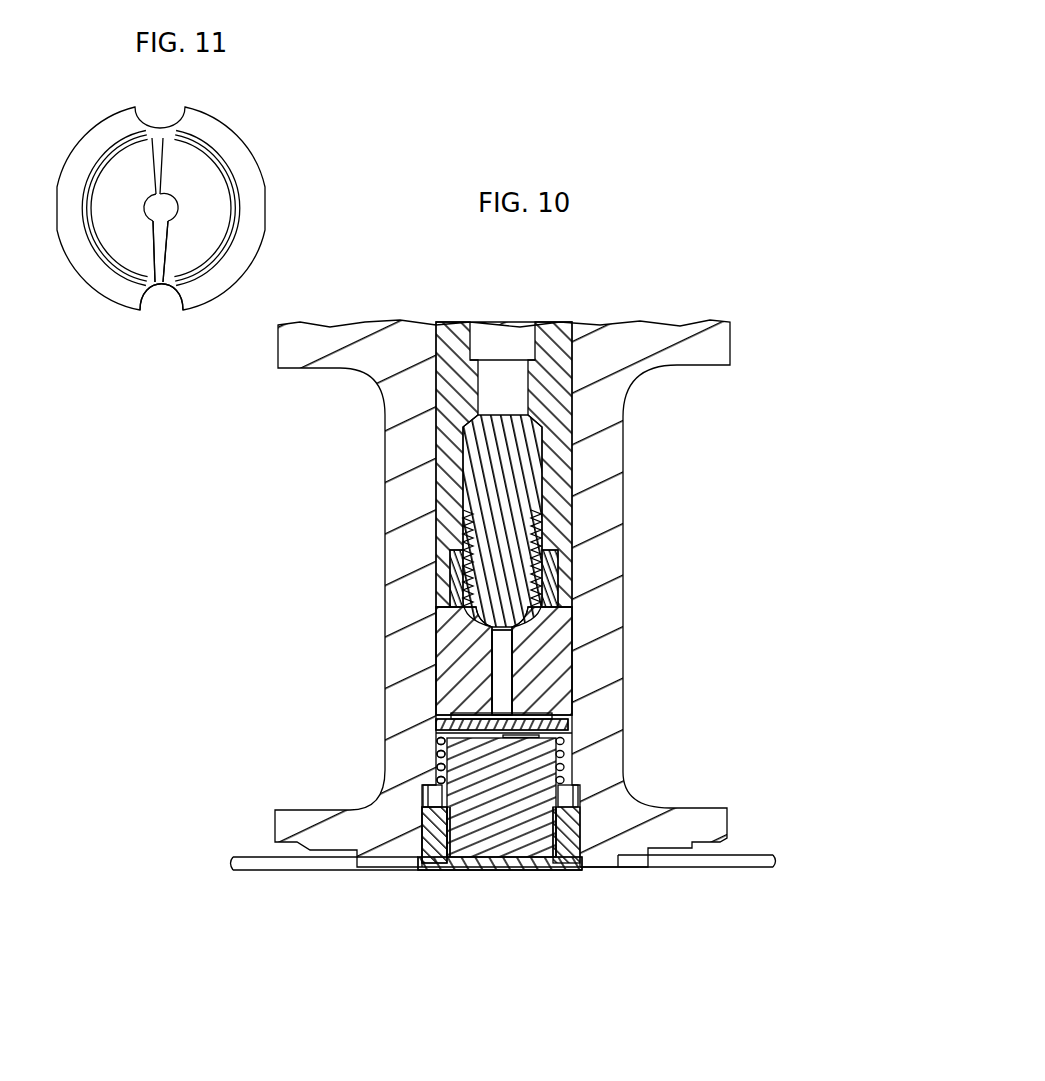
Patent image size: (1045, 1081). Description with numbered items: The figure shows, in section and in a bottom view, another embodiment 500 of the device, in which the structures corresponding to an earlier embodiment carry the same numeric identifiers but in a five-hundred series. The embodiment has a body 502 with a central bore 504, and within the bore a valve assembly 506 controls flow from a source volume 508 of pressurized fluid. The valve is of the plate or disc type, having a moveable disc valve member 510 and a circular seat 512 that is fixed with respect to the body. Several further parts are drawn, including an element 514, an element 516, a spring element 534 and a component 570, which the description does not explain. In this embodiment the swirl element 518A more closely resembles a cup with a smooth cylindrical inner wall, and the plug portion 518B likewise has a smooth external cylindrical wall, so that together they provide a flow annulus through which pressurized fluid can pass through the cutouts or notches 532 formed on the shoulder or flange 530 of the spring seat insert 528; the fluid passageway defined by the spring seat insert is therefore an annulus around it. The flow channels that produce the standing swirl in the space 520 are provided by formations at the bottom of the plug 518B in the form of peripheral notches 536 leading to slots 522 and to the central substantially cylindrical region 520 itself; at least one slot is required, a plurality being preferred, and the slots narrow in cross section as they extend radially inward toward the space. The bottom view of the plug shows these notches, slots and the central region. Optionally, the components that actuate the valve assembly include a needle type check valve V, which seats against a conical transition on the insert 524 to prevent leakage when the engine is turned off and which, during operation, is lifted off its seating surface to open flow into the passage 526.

In FIG. 10, the embodiment 500 is at (453, 604).
In FIG. 10, the body 502 is at (610, 510).
In FIG. 10, the central bore 504 is at (560, 477).
In FIG. 10, the needle type check valve V is at (475, 480).
In FIG. 10, the valve assembly 506 is at (565, 632).
In FIG. 10, the source volume 508 is at (575, 590).
In FIG. 10, the disc valve member 510 is at (572, 750).
In FIG. 10, the circular seat 512 is at (572, 718).
In FIG. 10, the lower insert 514 is at (580, 822).
In FIG. 10, the base ring 516 is at (487, 866).
In FIG. 10, the swirl element 518A is at (577, 852).
In FIG. 11, the plug portion 518B is at (252, 150).
In FIG. 10, the plug portion 518B is at (450, 862).
In FIG. 11, the space 520 is at (170, 211).
In FIG. 11, the slots 522 is at (168, 253).
In FIG. 10, the slots 522 is at (447, 858).
In FIG. 10, the insert 524 is at (467, 643).
In FIG. 10, the passage 526 is at (500, 667).
In FIG. 10, the spring seat insert 528 is at (437, 728).
In FIG. 10, the shoulder or flange 530 is at (425, 770).
In FIG. 11, the cutouts or notches 532 is at (152, 292).
In FIG. 10, the cutouts or notches 532 is at (420, 822).
In FIG. 10, the spring coil 534 is at (437, 770).
In FIG. 11, the peripheral notches 536 is at (162, 292).
In FIG. 10, the peripheral notches 536 is at (515, 872).
In FIG. 10, the bottom plate 570 is at (485, 862).